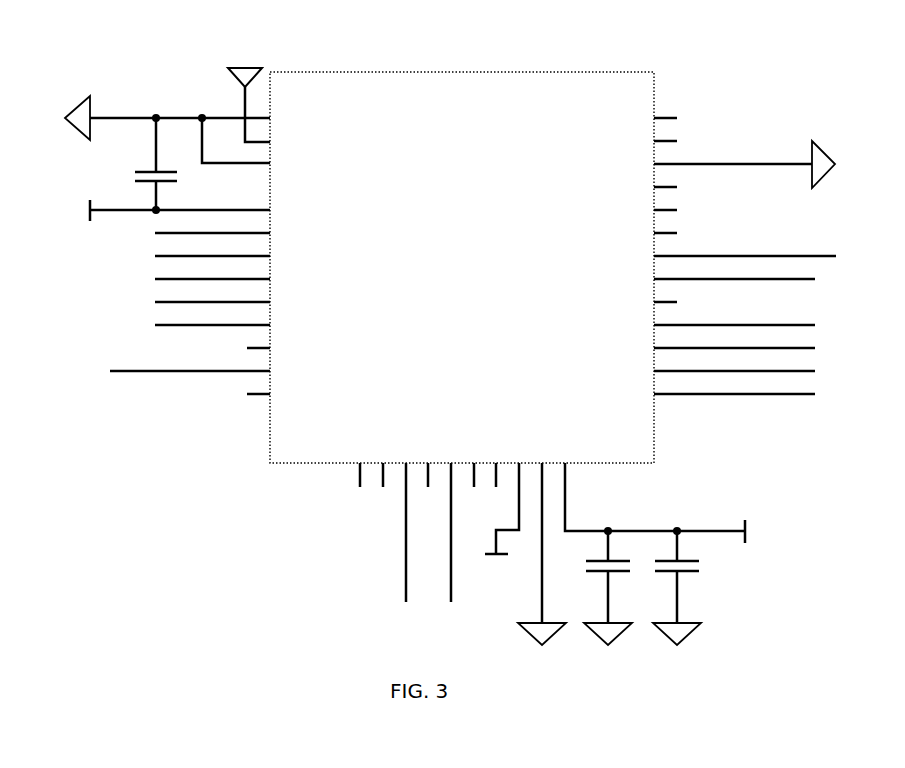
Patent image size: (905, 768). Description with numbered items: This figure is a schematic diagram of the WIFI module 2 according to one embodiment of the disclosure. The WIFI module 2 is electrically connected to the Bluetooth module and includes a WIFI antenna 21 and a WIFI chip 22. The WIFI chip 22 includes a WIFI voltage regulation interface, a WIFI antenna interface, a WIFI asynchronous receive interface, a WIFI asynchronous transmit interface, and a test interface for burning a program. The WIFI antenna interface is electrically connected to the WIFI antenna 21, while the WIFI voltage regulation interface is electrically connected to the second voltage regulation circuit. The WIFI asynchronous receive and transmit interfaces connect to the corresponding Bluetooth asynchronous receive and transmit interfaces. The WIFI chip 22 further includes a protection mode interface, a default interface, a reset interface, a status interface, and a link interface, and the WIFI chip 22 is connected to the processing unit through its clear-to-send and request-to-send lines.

The WIFI module 2 is at (177, 74).
The WIFI antenna 21 is at (246, 67).
The WIFI chip 22 is at (380, 72).